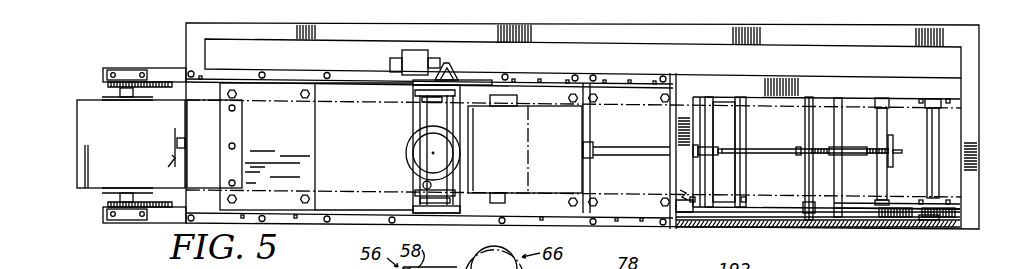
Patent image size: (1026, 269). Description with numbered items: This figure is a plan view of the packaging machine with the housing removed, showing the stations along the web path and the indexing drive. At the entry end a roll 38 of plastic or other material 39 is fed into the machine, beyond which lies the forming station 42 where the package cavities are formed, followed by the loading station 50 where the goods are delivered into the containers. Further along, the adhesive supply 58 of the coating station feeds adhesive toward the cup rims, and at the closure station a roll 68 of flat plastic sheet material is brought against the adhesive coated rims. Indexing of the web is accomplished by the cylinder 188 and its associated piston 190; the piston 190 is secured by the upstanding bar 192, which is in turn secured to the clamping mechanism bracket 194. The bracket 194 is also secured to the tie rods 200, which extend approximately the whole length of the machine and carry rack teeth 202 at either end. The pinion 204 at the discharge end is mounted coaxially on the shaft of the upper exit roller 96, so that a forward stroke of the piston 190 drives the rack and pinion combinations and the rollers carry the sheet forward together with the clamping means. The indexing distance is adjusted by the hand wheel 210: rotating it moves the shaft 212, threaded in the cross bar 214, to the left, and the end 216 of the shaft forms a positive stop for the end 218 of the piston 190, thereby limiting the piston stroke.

The roll 38 is at (95, 191).
The material 39 is at (110, 130).
The forming station 42 is at (286, 150).
The loading station 50 is at (367, 151).
The adhesive supply 58 is at (422, 152).
The roll 68 is at (503, 136).
The upper exit roller 96 is at (939, 130).
The cylinder 188 is at (640, 126).
The piston 190 is at (706, 148).
The upstanding bar 192 is at (708, 158).
The clamping mechanism bracket 194 is at (746, 167).
The tie rods 200 is at (160, 83).
The rack teeth 202 is at (123, 223).
The pinion 204 is at (948, 217).
The hand wheel 210 is at (894, 142).
The shaft 212 is at (867, 155).
The cross bar 214 is at (834, 127).
The end of the shaft 216 is at (796, 150).
The end of the piston 218 is at (718, 148).